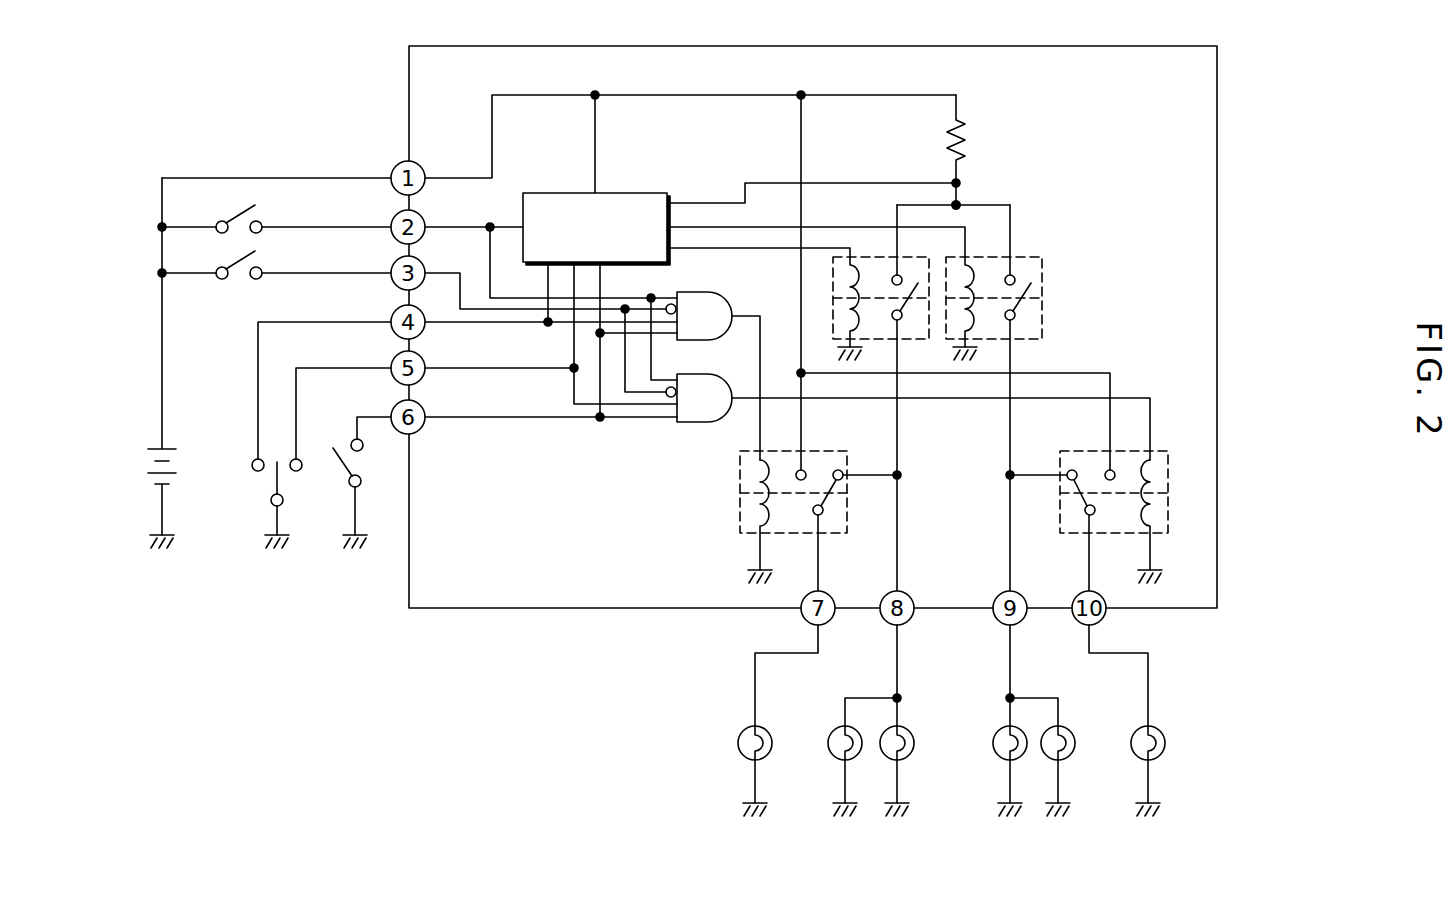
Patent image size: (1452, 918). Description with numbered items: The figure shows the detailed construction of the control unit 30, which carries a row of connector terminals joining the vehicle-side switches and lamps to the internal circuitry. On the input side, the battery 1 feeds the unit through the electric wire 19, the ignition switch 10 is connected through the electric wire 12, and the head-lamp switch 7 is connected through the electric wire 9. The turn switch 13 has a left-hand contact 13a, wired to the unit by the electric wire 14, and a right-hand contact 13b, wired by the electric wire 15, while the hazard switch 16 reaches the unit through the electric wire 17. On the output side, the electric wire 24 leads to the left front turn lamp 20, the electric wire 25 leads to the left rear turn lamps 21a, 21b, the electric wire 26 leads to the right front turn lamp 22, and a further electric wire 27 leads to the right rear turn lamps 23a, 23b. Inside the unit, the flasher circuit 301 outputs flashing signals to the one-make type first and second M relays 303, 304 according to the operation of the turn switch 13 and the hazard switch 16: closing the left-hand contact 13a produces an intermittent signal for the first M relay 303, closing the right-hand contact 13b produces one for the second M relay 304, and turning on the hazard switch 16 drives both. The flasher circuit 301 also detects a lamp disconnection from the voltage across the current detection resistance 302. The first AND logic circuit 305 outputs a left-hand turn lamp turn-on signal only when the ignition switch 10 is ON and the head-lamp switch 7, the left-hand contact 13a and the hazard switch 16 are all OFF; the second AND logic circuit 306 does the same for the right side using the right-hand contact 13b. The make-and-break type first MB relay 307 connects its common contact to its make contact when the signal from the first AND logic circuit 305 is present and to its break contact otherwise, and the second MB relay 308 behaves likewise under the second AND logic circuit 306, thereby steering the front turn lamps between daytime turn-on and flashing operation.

The battery 1 is at (142, 466).
The head-lamp switch 7 is at (238, 257).
The electric wire 9 is at (310, 272).
The ignition switch 10 is at (238, 210).
The electric wire 12 is at (310, 226).
The turn switch 13 is at (282, 500).
The left-hand contact 13a is at (252, 465).
The right-hand contact 13b is at (322, 451).
The electric wire 14 is at (318, 321).
The electric wire 15 is at (337, 366).
The hazard switch 16 is at (362, 470).
The electric wire 17 is at (363, 415).
The electric wire 19 is at (310, 176).
The left front turn lamp 20 is at (742, 752).
The left rear turn lamp 21a is at (832, 752).
The left rear turn lamp 21b is at (908, 752).
The right front turn lamp 22 is at (1163, 752).
The right rear turn lamp 23a is at (1068, 752).
The right rear turn lamp 23b is at (994, 736).
The electric wire 24 is at (817, 640).
The electric wire 25 is at (895, 665).
The electric wire 26 is at (1092, 640).
The right lamp line 27 is at (1012, 665).
The control unit 30 is at (714, 46).
The flasher circuit 301 is at (638, 193).
The current detection resistance 302 is at (967, 137).
The first M relay 303 is at (877, 257).
The second M relay 304 is at (1042, 315).
The first AND logic circuit 305 is at (737, 282).
The second AND logic circuit 306 is at (728, 367).
The first MB relay 307 is at (740, 502).
The second MB relay 308 is at (1075, 536).